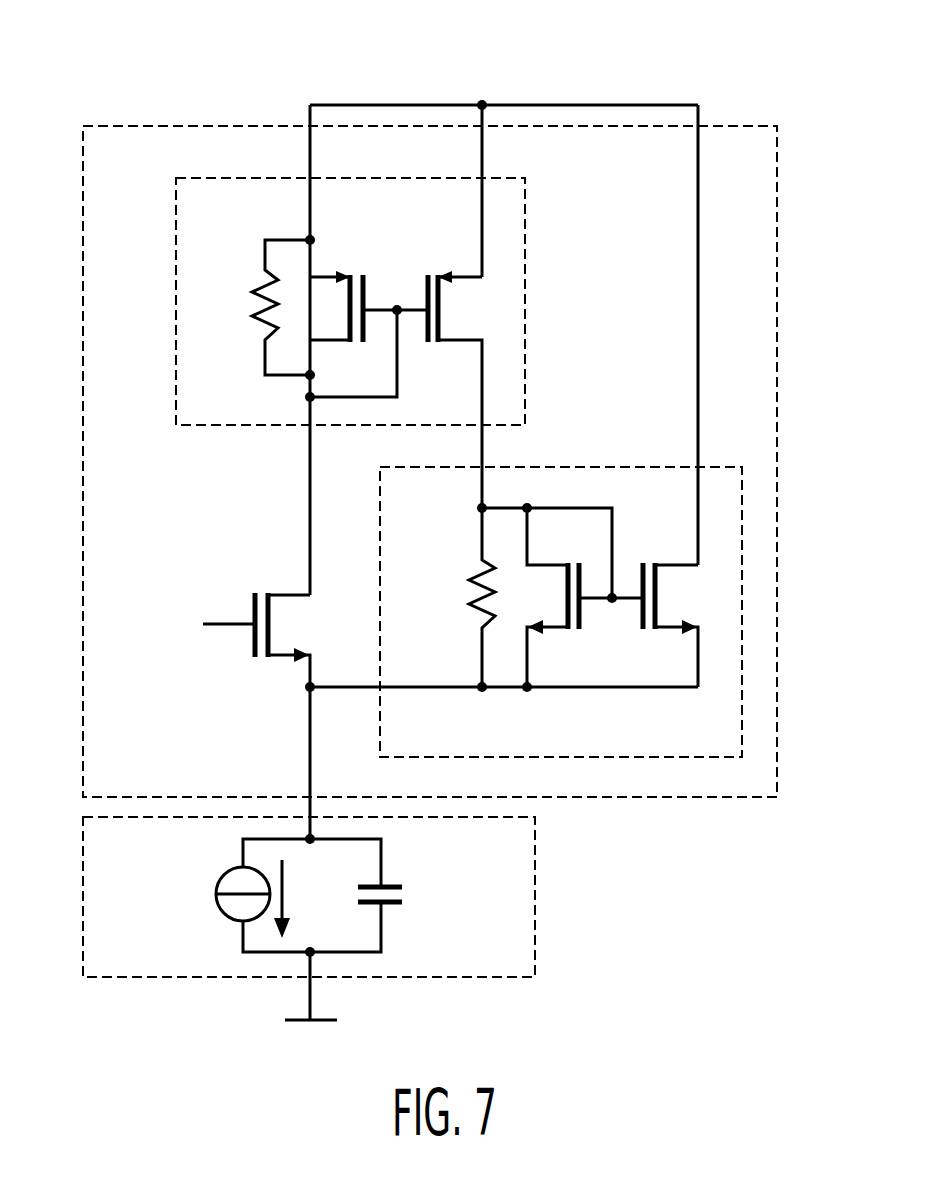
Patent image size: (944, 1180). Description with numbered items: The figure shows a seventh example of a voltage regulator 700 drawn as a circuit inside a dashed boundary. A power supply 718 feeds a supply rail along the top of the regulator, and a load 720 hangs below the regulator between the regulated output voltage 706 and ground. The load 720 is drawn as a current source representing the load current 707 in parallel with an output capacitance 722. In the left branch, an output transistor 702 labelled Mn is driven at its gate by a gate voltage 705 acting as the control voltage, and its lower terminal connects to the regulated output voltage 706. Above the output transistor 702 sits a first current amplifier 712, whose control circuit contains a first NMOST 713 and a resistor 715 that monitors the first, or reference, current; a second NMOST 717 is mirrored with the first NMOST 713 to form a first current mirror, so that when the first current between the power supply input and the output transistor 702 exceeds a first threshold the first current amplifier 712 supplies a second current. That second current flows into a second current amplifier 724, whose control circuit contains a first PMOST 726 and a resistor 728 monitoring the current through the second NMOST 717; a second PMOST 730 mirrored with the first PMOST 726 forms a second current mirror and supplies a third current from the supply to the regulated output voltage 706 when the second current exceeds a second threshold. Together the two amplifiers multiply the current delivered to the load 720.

The voltage regulator 700 is at (746, 125).
The power supply 718 is at (548, 104).
The first current amplifier 712 is at (525, 214).
The resistor 715 is at (255, 283).
The first NMOST 713 is at (336, 268).
The second NMOST 717 is at (443, 270).
The second current amplifier 724 is at (587, 466).
The resistor 728 is at (473, 575).
The first PMOST 726 is at (548, 628).
The second PMOST 730 is at (663, 563).
The regulated output voltage 706 is at (628, 690).
The gate voltage 705 is at (196, 593).
The output transistor 702 is at (250, 648).
The load 720 is at (535, 873).
The load current 707 is at (287, 897).
The output capacitance 722 is at (392, 904).